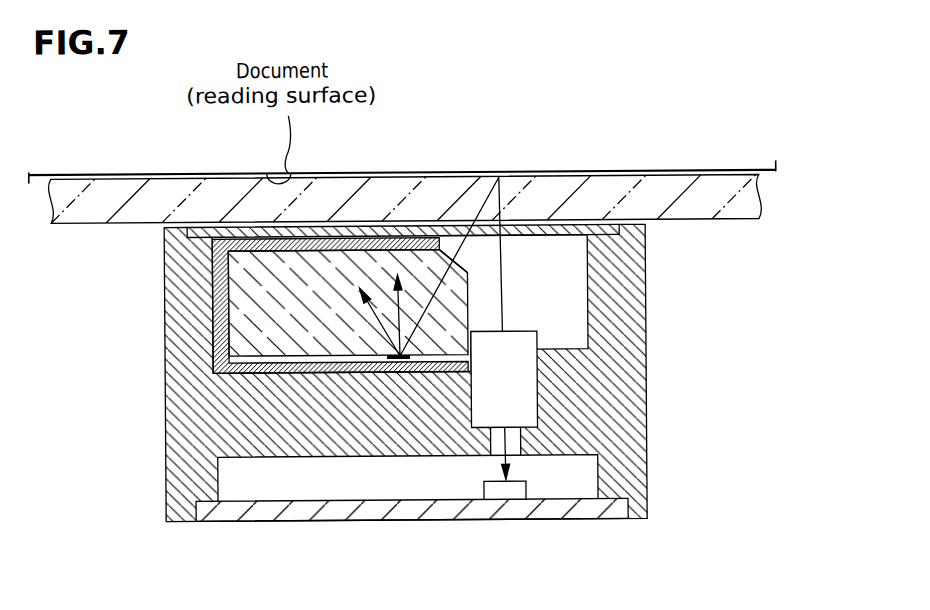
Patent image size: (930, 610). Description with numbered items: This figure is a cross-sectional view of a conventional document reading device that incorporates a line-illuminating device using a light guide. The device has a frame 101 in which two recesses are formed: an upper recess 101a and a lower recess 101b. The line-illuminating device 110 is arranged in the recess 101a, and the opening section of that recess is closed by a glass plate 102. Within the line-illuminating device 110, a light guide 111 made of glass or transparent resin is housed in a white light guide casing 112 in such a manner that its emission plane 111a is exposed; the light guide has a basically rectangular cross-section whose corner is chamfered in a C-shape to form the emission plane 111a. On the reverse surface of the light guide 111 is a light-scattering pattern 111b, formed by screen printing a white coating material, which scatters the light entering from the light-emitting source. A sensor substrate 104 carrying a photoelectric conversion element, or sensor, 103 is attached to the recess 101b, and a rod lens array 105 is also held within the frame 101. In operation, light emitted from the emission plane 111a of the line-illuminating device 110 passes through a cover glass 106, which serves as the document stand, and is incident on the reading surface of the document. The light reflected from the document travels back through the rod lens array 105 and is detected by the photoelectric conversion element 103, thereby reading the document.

The frame 101 is at (195, 403).
The recess 101a is at (583, 298).
The recess 101b is at (220, 478).
The glass plate 102 is at (560, 232).
The photoelectric conversion element (sensor) 103 is at (505, 492).
The sensor substrate 104 is at (575, 515).
The rod lens array 105 is at (520, 383).
The cover glass 106 is at (70, 192).
The line-illuminating device 110 is at (256, 340).
The light guide 111 is at (263, 322).
The emission plane 111a is at (453, 260).
The light-scattering pattern 111b is at (399, 362).
The light guide casing 112 is at (222, 287).